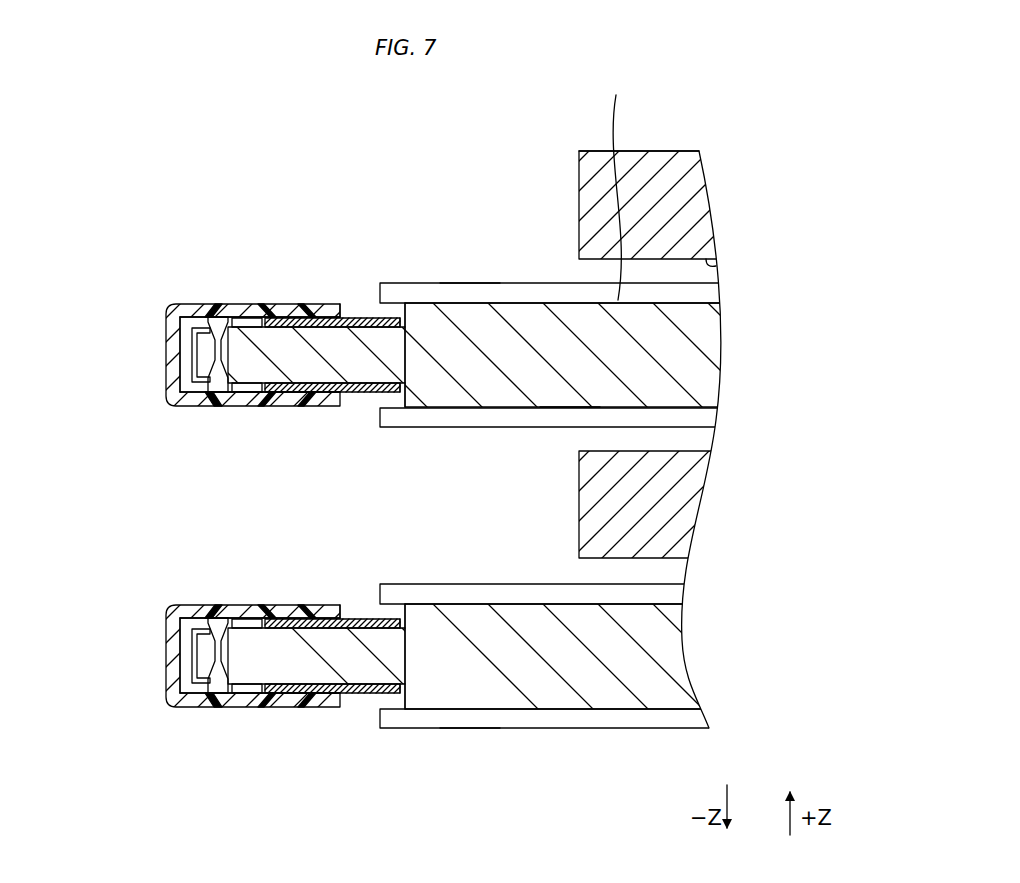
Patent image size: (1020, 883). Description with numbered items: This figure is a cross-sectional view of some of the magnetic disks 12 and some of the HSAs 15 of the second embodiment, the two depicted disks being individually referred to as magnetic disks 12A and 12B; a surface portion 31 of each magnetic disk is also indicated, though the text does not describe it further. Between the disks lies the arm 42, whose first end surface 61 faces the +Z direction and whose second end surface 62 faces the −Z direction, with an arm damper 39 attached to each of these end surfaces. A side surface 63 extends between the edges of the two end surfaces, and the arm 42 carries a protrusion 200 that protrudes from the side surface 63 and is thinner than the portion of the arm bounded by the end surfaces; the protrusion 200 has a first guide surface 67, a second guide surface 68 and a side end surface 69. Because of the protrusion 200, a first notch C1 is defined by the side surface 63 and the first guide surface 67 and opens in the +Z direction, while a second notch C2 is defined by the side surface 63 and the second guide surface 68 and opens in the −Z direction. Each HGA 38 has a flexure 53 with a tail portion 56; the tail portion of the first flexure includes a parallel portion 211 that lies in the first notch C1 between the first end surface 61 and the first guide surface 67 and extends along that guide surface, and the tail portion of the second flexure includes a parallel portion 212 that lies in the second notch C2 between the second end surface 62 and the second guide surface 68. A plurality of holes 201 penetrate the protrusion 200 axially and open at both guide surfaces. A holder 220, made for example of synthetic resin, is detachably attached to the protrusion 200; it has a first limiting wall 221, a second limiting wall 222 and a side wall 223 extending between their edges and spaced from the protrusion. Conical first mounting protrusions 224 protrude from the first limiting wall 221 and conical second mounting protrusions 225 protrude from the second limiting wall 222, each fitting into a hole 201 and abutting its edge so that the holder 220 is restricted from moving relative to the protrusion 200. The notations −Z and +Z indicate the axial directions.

The magnetic disk 12 is at (655, 355).
The magnetic disk 12A is at (588, 170).
The magnetic disk 12B is at (680, 504).
The HSA 15 is at (465, 280).
The frame surface 31 is at (679, 150).
The HGA 38 is at (331, 475).
The arm damper 39 is at (533, 293).
The arm 42 is at (500, 386).
The flexure 53 is at (331, 475).
The tail portion 56 is at (362, 818).
The first end surface 61 is at (613, 186).
The second end surface 62 is at (560, 410).
The side surface 63 is at (398, 410).
The first guide surface 67 is at (393, 316).
The second guide surface 68 is at (368, 394).
The side end surface 69 is at (200, 346).
The protrusion 200 is at (262, 345).
The hole 201 is at (215, 370).
The parallel portion 211 is at (293, 316).
The parallel portion 212 is at (285, 394).
The holder 220 is at (166, 300).
The first limiting wall 221 is at (247, 304).
The second limiting wall 222 is at (196, 398).
The side wall 223 is at (170, 332).
The first mounting protrusion 224 is at (213, 306).
The second mounting protrusion 225 is at (215, 405).
The first notch C1 is at (362, 300).
The second notch C2 is at (246, 397).